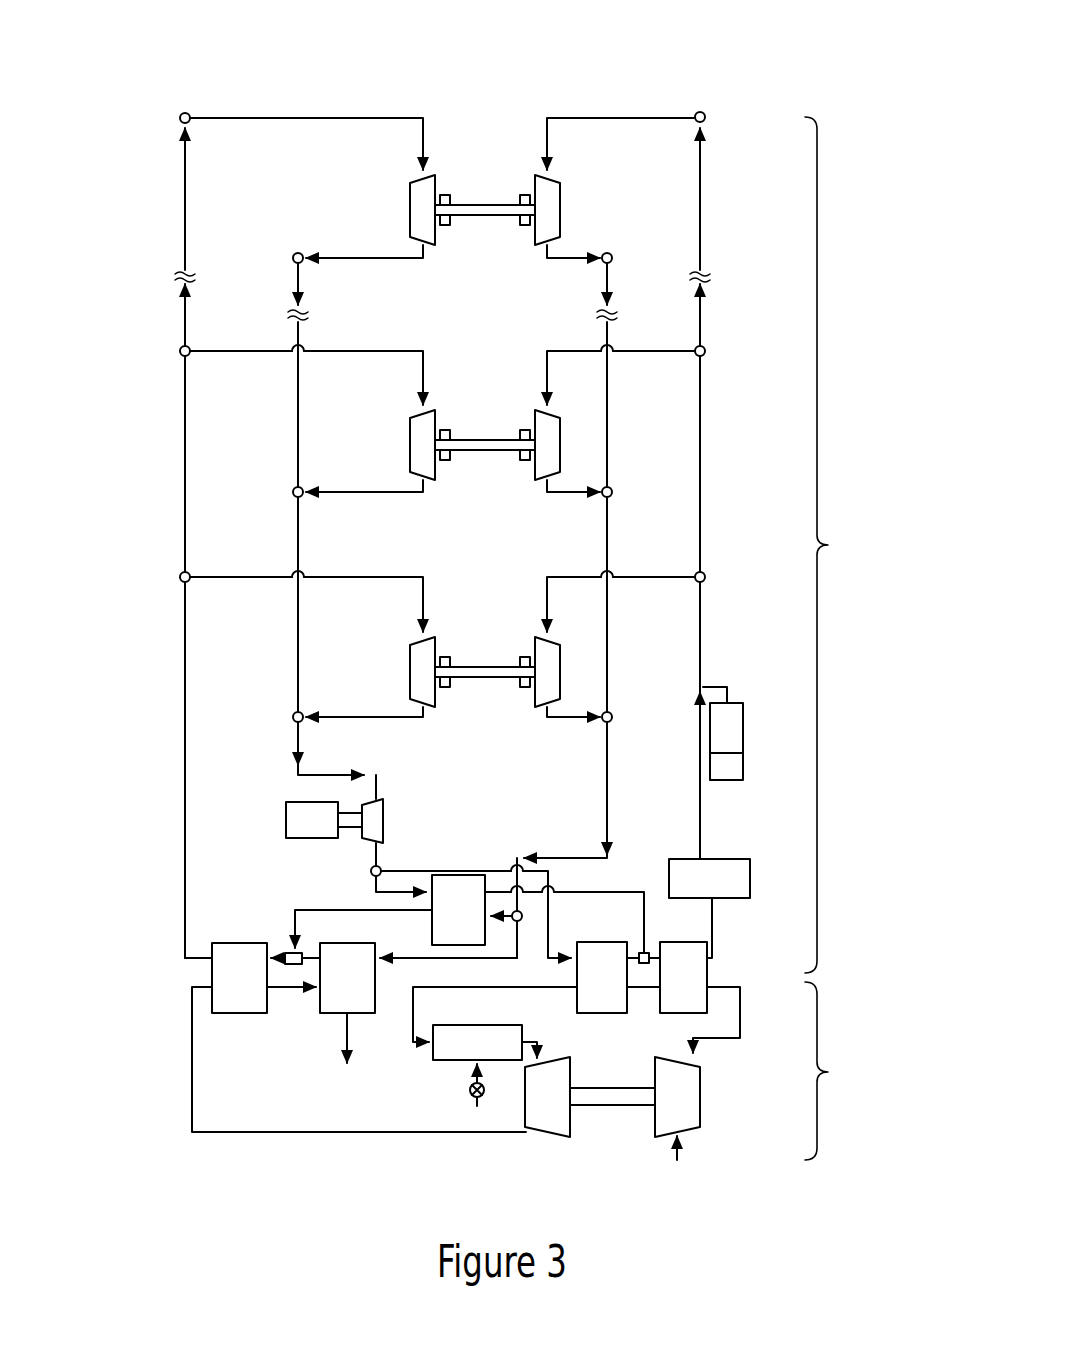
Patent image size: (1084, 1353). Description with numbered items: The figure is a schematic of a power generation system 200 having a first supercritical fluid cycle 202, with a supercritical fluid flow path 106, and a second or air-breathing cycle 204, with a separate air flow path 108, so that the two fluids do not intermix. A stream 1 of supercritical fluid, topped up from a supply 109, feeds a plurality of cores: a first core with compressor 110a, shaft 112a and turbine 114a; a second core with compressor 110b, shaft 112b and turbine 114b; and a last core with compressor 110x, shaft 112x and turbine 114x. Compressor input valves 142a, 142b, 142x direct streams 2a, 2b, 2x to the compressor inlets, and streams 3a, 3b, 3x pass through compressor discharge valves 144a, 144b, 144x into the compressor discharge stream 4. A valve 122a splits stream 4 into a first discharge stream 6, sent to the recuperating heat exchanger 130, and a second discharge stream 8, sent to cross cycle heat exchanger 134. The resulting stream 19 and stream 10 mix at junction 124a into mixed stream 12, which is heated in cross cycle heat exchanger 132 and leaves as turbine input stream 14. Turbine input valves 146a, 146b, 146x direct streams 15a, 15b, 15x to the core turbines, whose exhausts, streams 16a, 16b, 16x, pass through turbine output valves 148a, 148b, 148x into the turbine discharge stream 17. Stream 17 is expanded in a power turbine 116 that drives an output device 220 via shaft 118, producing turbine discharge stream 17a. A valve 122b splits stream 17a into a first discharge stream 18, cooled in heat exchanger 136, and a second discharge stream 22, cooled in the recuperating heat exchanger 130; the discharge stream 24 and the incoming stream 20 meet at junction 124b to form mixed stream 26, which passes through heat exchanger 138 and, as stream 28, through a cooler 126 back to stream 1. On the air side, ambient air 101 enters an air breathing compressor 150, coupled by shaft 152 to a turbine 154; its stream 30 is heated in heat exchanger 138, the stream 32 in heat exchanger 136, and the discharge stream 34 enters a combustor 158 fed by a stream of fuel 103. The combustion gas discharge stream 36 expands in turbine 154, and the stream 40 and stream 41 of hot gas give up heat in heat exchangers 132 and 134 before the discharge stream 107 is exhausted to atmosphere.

The power generation system 200 is at (285, 68).
The stream of supercritical fluid 1 is at (700, 185).
The stream of supercritical fluid 2x is at (642, 118).
The stream of supercritical fluid 2b is at (660, 351).
The stream of supercritical fluid 2a is at (660, 577).
The stream of compressed supercritical fluid 3x is at (565, 260).
The stream of compressed supercritical fluid 3b is at (565, 494).
The stream of compressed supercritical fluid 3a is at (585, 719).
The compressor discharge stream 4 is at (607, 280).
The first compressor discharge stream 6 is at (505, 913).
The second compressor discharge stream 8 is at (455, 960).
The stream of heated supercritical fluid 10 is at (309, 957).
The mixed stream 12 is at (287, 953).
The turbine input stream 14 is at (185, 185).
The stream of supercritical fluid 15x is at (240, 118).
The stream of supercritical fluid 15b is at (240, 351).
The stream of supercritical fluid 15a is at (240, 577).
The stream of expanded supercritical fluid 16x is at (330, 260).
The stream of expanded supercritical fluid 16b is at (330, 494).
The stream of expanded supercritical fluid 16a is at (326, 719).
The turbine discharge stream 17 is at (298, 277).
The turbine discharge stream 17a is at (380, 857).
The first turbine discharge stream 18 is at (466, 870).
The stream of heated supercritical fluid 19 is at (295, 908).
The incoming stream 20 is at (641, 953).
The second turbine discharge stream 22 is at (374, 891).
The discharge stream 24 is at (618, 891).
The mixed stream 26 is at (655, 957).
The stream of cooled supercritical fluid 28 is at (714, 926).
The stream of compressed air 30 is at (740, 1002).
The stream of heated compressed air 32 is at (645, 989).
The discharge stream 34 is at (530, 989).
The discharge stream of combustion gas 36 is at (540, 1043).
The stream of expanded hot combustion gas 40 is at (258, 1132).
The stream of hot combustion gas 41 is at (275, 990).
The ambient air 101 is at (681, 1150).
The stream of fuel 103 is at (470, 1091).
The supercritical fluid flow path 106 is at (706, 632).
The discharge stream 107 is at (350, 1050).
The air fluid flow path 108 is at (518, 1138).
The supply 109 is at (723, 733).
The compressor 110x is at (548, 186).
The compressor 110b is at (550, 422).
The compressor 110a is at (550, 649).
The shaft 112x is at (463, 216).
The shaft 112b is at (463, 451).
The shaft 112a is at (463, 677).
The turbine 114x is at (442, 186).
The turbine 114b is at (442, 422).
The turbine 114a is at (442, 649).
The power turbine 116 is at (384, 822).
The shaft 118 is at (339, 818).
The valve 122a is at (521, 921).
The valve 122b is at (371, 869).
The junction 124a is at (297, 966).
The junction 124b is at (648, 966).
The cooler 126 is at (709, 878).
The recuperating heat exchanger 130 is at (458, 910).
The cross cycle heat exchanger 132 is at (239, 978).
The cross cycle heat exchanger 134 is at (347, 978).
The cross cycle heat exchanger 136 is at (602, 977).
The cross cycle heat exchanger 138 is at (683, 977).
The compressor input valve 142x is at (702, 112).
The compressor input valve 142b is at (705, 350).
The compressor input valve 142a is at (705, 576).
The compressor discharge valve 144x is at (608, 253).
The compressor discharge valve 144b is at (612, 490).
The compressor discharge valve 144a is at (612, 715).
The turbine input valve 146x is at (185, 113).
The turbine input valve 146b is at (180, 350).
The turbine input valve 146a is at (180, 576).
The turbine output valve 148x is at (298, 253).
The turbine output valve 148b is at (293, 490).
The turbine output valve 148a is at (293, 715).
The air breathing compressor 150 is at (678, 1125).
The shaft 152 is at (585, 1096).
The turbine 154 is at (547, 1097).
The combustor 158 is at (477, 1042).
The first supercritical fluid cycle 202 is at (836, 545).
The air-breathing cycle 204 is at (836, 1071).
The output device 220 is at (312, 820).